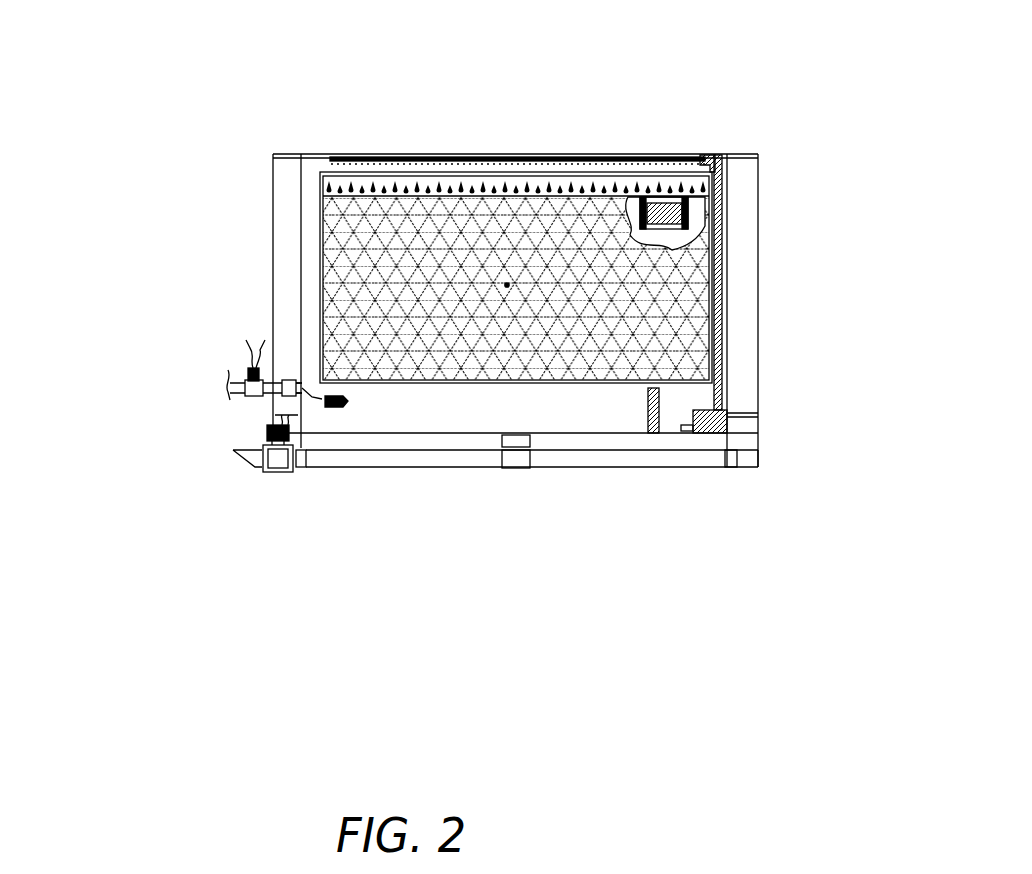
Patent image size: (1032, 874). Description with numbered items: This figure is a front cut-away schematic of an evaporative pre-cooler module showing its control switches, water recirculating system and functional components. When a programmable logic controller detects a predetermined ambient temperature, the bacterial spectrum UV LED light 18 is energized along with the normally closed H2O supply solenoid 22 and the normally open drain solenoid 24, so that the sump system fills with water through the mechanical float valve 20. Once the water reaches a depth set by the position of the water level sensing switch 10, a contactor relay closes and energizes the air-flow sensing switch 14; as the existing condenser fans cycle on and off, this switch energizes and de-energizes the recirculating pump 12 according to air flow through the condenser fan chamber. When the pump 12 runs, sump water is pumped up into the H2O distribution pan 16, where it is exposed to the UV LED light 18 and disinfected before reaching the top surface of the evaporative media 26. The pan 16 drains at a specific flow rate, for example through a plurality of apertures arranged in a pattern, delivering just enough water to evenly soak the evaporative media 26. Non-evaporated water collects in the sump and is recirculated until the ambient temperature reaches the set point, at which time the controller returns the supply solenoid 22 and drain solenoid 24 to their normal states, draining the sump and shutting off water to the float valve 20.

The water level sensing switch 10 is at (641, 410).
The recirculating pump 12 is at (727, 410).
The air-flow sensing switch 14 is at (688, 212).
The H2O distribution pan 16 is at (320, 172).
The bacterial spectrum UV LED light 18 is at (318, 157).
The mechanical float valve 20 is at (289, 381).
The H2O supply solenoid 22 is at (248, 370).
The drain solenoid 24 is at (265, 438).
The evaporative media 26 is at (507, 285).